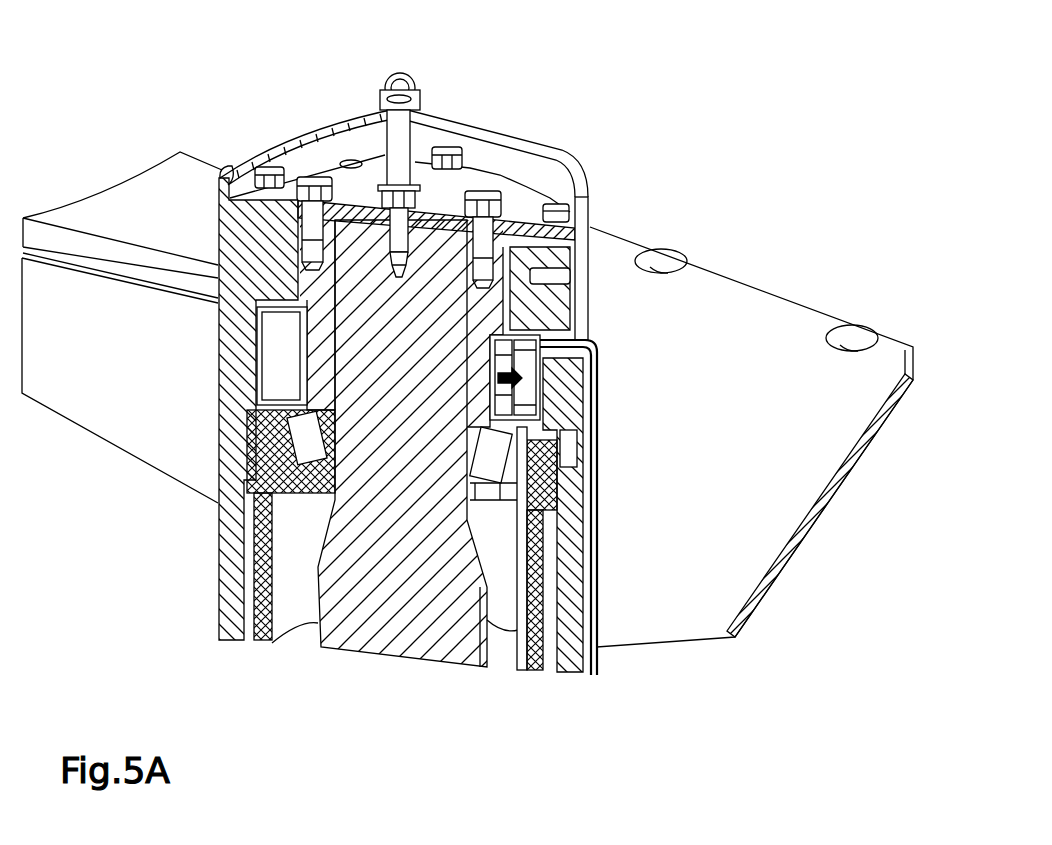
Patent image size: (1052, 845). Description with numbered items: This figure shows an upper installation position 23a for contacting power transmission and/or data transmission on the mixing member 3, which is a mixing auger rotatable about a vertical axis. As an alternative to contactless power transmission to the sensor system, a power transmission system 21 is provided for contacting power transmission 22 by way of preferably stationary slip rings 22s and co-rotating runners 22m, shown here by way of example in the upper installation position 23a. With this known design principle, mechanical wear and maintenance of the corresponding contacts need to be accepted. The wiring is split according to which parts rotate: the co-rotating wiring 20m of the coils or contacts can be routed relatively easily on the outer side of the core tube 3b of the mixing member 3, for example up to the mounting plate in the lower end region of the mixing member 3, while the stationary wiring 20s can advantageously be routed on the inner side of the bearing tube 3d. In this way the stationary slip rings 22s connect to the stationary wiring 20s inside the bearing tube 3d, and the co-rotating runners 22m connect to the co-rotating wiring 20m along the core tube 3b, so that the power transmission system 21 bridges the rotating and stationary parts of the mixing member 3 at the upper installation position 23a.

The mixing member 3 is at (575, 122).
The bearing tube 3d is at (222, 618).
The core tube 3b is at (582, 680).
The co-rotating wiring 20m is at (600, 610).
The stationary wiring 20s is at (532, 672).
The power transmission system 21 is at (737, 167).
The contacting power transmission 22 is at (612, 311).
The slip rings 22s is at (523, 333).
The runners 22m is at (551, 345).
The upper installation position 23a is at (487, 412).